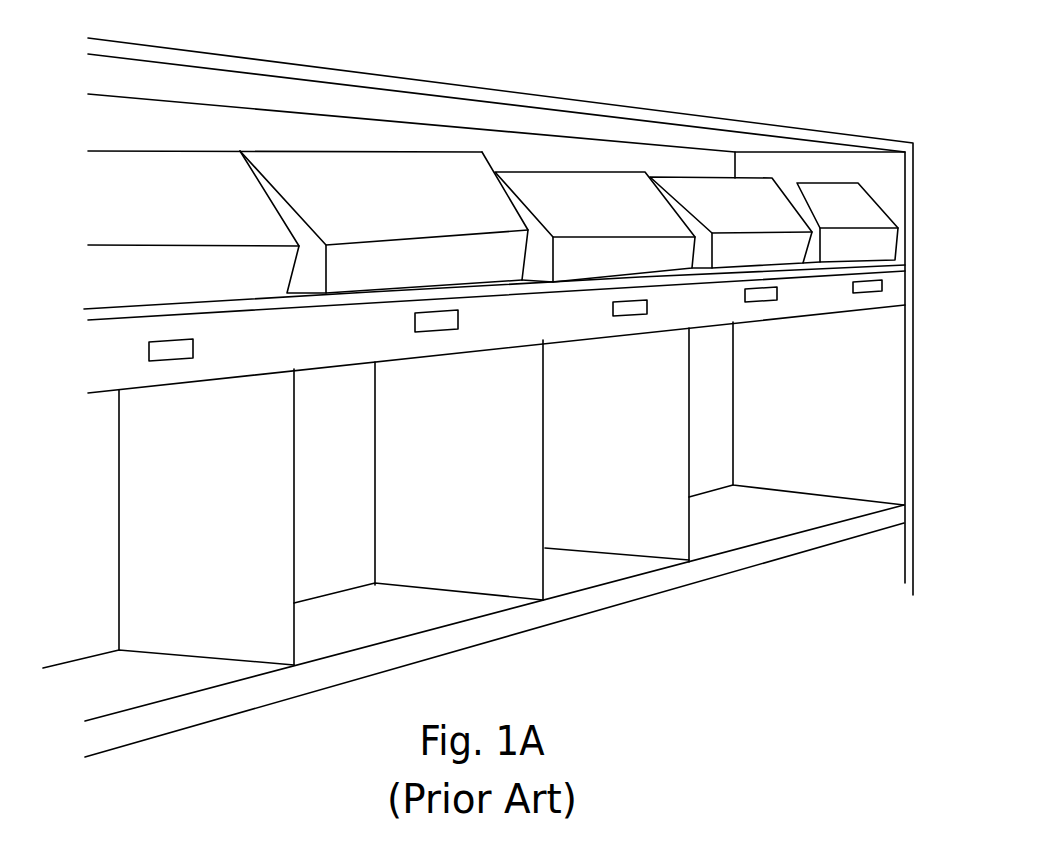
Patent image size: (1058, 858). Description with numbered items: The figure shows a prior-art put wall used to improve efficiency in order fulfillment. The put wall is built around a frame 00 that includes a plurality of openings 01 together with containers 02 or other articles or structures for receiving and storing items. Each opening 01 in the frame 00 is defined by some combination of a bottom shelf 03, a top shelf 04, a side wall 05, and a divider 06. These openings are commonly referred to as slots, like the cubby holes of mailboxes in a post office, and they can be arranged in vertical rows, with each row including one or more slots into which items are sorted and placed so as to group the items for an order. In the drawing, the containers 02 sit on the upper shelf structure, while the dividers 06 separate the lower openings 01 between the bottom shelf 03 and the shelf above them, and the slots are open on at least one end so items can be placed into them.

The frame 00 is at (556, 42).
The opening 01 is at (876, 407).
The container 02 is at (885, 212).
The bottom shelf 03 is at (777, 562).
The top shelf 04 is at (753, 318).
The side wall 05 is at (905, 323).
The divider 06 is at (689, 433).